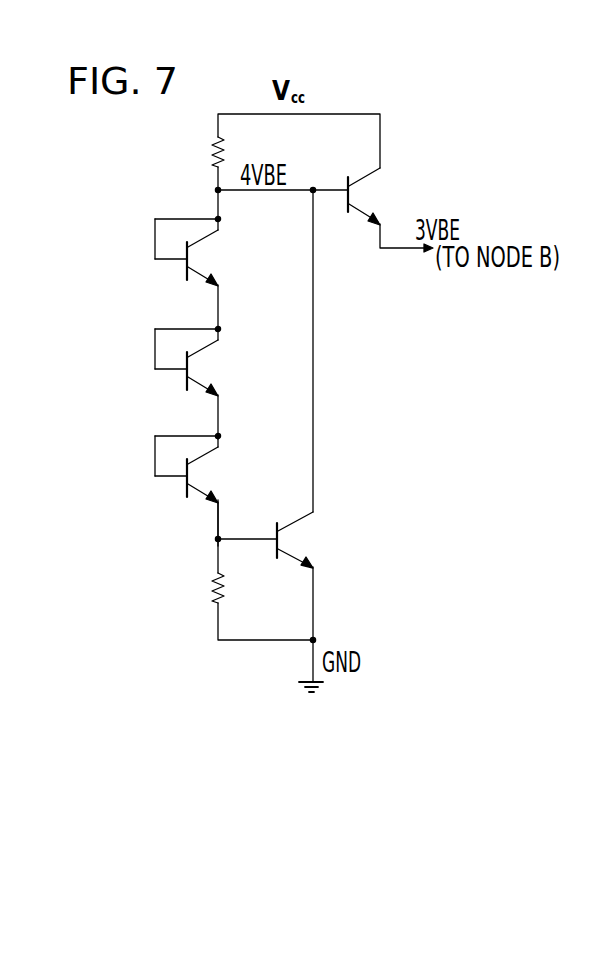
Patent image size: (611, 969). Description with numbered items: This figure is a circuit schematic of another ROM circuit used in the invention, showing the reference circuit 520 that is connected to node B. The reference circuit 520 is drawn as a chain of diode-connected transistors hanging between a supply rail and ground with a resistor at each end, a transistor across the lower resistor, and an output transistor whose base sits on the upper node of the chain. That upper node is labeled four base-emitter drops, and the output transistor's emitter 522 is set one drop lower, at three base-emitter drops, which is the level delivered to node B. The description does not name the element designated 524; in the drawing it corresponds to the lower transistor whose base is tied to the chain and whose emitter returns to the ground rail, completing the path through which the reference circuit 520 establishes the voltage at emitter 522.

The reference circuit 520 is at (404, 166).
The emitter 522 is at (369, 211).
The current mirror transistor 524 is at (295, 553).